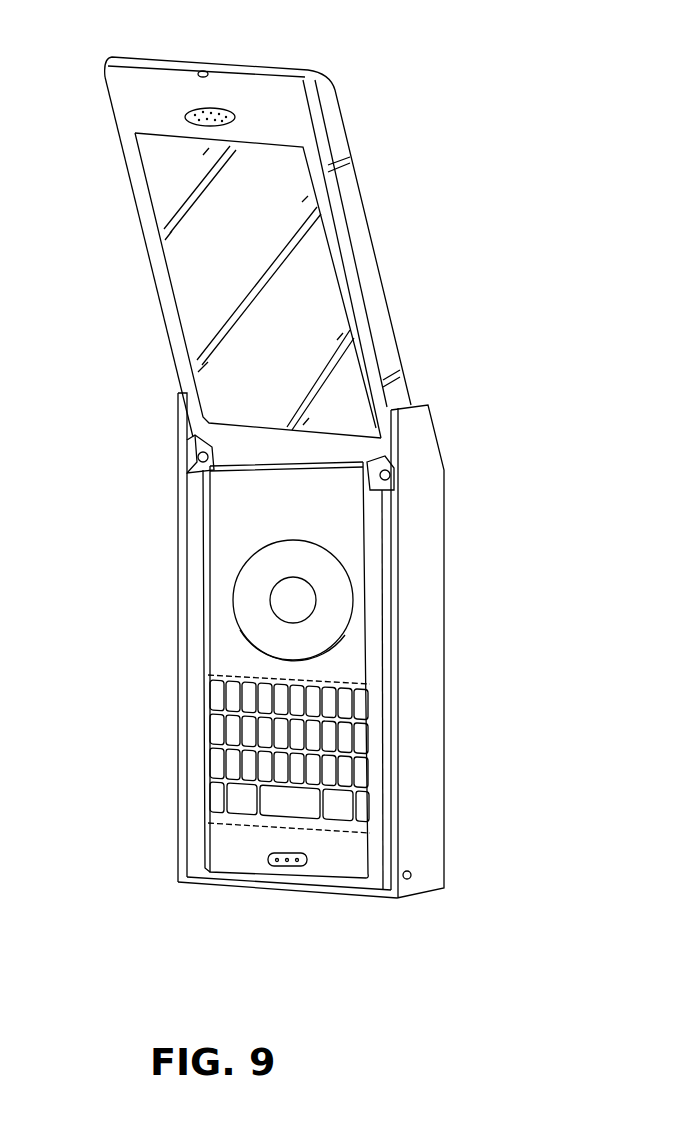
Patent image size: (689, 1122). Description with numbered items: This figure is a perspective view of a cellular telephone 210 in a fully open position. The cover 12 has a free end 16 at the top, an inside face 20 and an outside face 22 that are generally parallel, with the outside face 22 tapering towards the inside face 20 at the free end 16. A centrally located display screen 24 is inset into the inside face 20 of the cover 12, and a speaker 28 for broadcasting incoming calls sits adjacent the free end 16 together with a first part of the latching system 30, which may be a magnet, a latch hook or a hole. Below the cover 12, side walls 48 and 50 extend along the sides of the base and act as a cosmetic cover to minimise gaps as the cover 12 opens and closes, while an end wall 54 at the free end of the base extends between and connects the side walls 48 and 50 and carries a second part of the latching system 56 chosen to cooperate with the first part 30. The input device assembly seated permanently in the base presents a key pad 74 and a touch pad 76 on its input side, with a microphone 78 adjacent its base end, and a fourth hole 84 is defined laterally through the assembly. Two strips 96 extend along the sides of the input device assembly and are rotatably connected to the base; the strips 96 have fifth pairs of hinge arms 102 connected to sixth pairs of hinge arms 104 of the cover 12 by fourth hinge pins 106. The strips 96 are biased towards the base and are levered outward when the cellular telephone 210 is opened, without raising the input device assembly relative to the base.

The cover 12 is at (333, 135).
The free end 16 is at (277, 72).
The inside face 20 is at (355, 263).
The outside face 22 is at (358, 197).
The display screen 24 is at (183, 262).
The speaker 28 is at (190, 112).
The first part of the latching system 30 is at (203, 71).
The side wall 48 is at (176, 843).
The side wall 50 is at (410, 856).
The end wall 54 is at (190, 883).
The second part of the latching system 56 is at (284, 889).
The key pad 74 is at (207, 772).
The touch pad 76 is at (262, 550).
The microphone 78 is at (268, 862).
The fourth hole 84 is at (410, 878).
The strips 96 is at (188, 573).
The fifth pairs of hinge arms 102 is at (190, 445).
The sixth pairs of hinge arms 104 is at (190, 455).
The fourth hinge pins 106 is at (188, 470).
The cellular telephone 210 is at (476, 178).